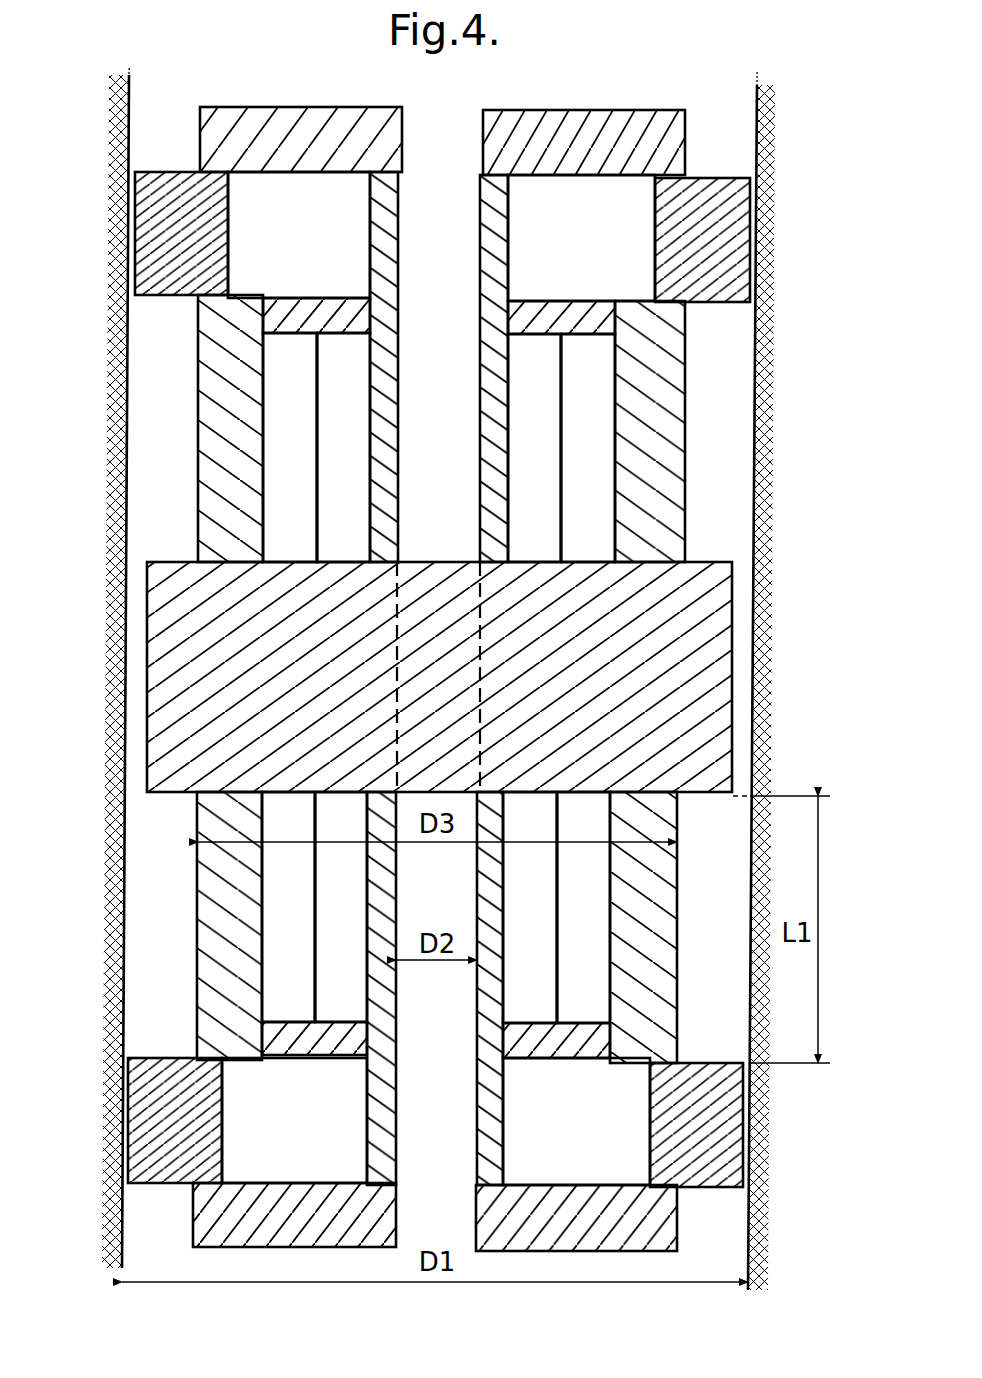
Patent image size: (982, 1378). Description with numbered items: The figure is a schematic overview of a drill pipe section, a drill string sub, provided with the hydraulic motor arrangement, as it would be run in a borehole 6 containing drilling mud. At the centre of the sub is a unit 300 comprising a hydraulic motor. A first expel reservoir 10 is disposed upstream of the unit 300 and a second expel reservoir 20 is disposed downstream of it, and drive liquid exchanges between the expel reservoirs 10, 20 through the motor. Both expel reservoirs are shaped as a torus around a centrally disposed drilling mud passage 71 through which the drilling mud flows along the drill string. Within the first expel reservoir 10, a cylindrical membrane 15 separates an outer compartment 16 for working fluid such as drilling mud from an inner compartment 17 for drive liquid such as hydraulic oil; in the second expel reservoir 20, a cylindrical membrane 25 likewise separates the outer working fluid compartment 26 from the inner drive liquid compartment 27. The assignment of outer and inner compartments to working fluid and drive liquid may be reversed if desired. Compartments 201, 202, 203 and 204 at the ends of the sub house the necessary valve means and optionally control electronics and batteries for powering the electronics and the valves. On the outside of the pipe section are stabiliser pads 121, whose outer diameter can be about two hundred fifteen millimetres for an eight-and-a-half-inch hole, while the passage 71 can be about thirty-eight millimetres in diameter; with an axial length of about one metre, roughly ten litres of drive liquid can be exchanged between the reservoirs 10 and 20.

The borehole 6 is at (114, 318).
The first expel reservoir 10 is at (700, 351).
The cylindrical membrane 15 is at (317, 513).
The working fluid compartment 16 is at (274, 378).
The drive liquid compartment 17 is at (329, 378).
The second expel reservoir 20 is at (141, 1020).
The cylindrical membrane 25 is at (315, 972).
The working fluid compartment 26 is at (270, 889).
The drive liquid compartment 27 is at (324, 889).
The drilling mud passage 71 is at (424, 243).
The stabiliser pads 121 is at (742, 203).
The compartment 201 is at (552, 1136).
The compartment 202 is at (272, 1136).
The compartment 203 is at (276, 249).
The compartment 204 is at (553, 249).
The unit comprising a hydraulic motor 300 is at (160, 688).